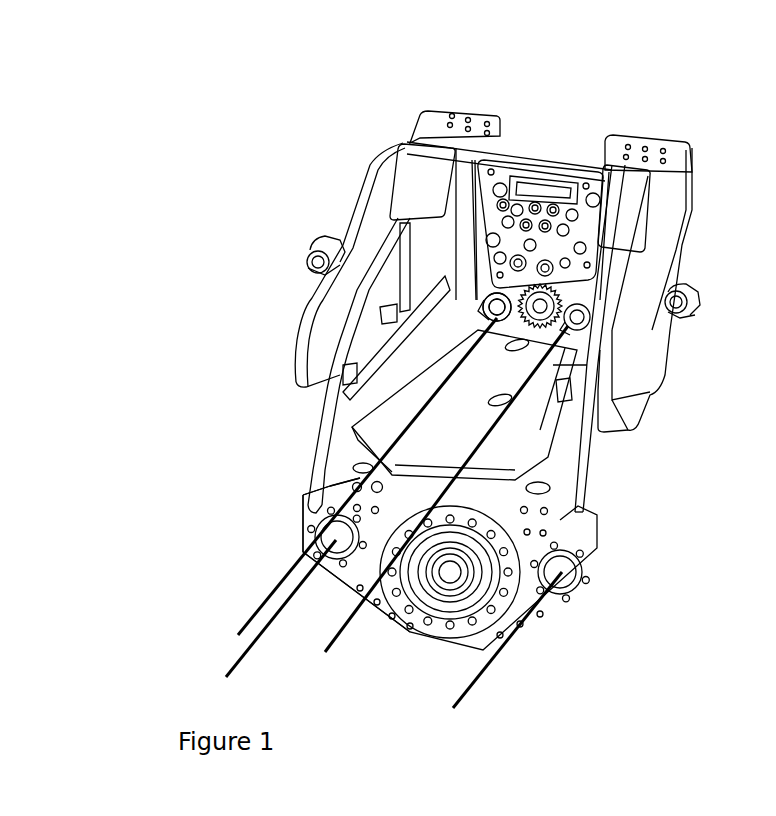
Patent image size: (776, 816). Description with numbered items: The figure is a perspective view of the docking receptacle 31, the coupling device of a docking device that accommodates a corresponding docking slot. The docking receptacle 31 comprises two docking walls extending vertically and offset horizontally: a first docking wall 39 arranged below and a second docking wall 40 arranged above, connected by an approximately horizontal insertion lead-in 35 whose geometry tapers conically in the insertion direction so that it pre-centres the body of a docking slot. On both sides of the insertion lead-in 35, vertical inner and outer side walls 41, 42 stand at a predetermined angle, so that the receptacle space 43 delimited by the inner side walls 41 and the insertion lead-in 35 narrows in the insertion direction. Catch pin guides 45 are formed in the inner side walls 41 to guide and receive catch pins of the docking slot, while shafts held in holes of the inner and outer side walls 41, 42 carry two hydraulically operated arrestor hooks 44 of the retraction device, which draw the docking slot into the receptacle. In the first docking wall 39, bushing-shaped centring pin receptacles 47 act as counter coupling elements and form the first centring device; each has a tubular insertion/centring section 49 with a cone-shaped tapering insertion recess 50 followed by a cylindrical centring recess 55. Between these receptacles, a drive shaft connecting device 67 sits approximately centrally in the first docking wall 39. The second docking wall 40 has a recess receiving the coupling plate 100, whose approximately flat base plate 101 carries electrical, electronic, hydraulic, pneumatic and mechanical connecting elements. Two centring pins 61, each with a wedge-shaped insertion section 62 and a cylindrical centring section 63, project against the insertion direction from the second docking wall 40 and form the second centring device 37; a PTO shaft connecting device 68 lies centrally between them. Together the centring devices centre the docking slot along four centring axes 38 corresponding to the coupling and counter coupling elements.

The docking receptacle 31 is at (400, 80).
The second docking wall 40 is at (470, 162).
The base plate 101 is at (525, 167).
The coupling plate 100 is at (568, 167).
The centring pins 61 is at (488, 300).
The wedge-shaped insertion section 62 is at (355, 226).
The cylindrical centring section 63 is at (352, 223).
The PTO shaft connecting device 68 is at (555, 303).
The second centring device 37 is at (585, 324).
The outer side walls 42 is at (343, 326).
The arrestor hooks 44 is at (403, 263).
The catch pin guides 45 is at (410, 308).
The inner side walls 41 is at (431, 359).
The receptacle space 43 is at (440, 421).
The insertion lead-in 35 is at (461, 461).
The first docking wall 39 is at (560, 508).
The drive shaft connecting device 67 is at (433, 603).
The centring axes 38 is at (257, 607).
The bushing-shaped centring pin receptacles 47 is at (200, 494).
The tubular insertion/centring section 49 is at (254, 561).
The cone-shaped tapering insertion recess 50 is at (229, 496).
The cylindrical centring recess 55 is at (214, 500).